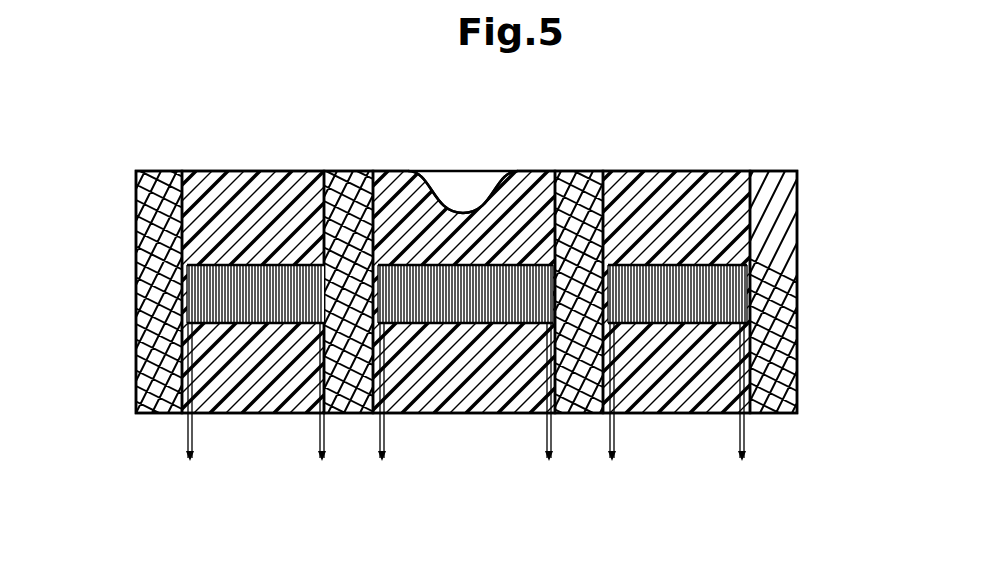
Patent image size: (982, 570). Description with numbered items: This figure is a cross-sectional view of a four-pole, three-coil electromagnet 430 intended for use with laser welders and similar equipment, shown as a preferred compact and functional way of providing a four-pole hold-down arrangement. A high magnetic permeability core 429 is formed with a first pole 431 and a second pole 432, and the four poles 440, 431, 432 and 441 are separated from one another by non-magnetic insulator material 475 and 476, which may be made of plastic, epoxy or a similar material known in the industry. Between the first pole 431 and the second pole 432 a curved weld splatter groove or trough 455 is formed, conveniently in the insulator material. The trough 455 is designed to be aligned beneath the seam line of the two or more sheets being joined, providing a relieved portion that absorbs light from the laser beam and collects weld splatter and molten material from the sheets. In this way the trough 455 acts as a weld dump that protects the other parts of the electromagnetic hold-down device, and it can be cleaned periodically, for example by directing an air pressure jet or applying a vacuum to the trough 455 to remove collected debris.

The electromagnet 430 is at (589, 119).
The high magnetic permeability core 429 is at (437, 313).
The first pole 431 is at (337, 173).
The second pole 432 is at (583, 180).
The pole 440 is at (148, 205).
The pole 441 is at (777, 208).
The weld splatter trough 455 is at (463, 211).
The non-magnetic insulator material 475 is at (220, 177).
The non-magnetic insulator material 476 is at (272, 393).